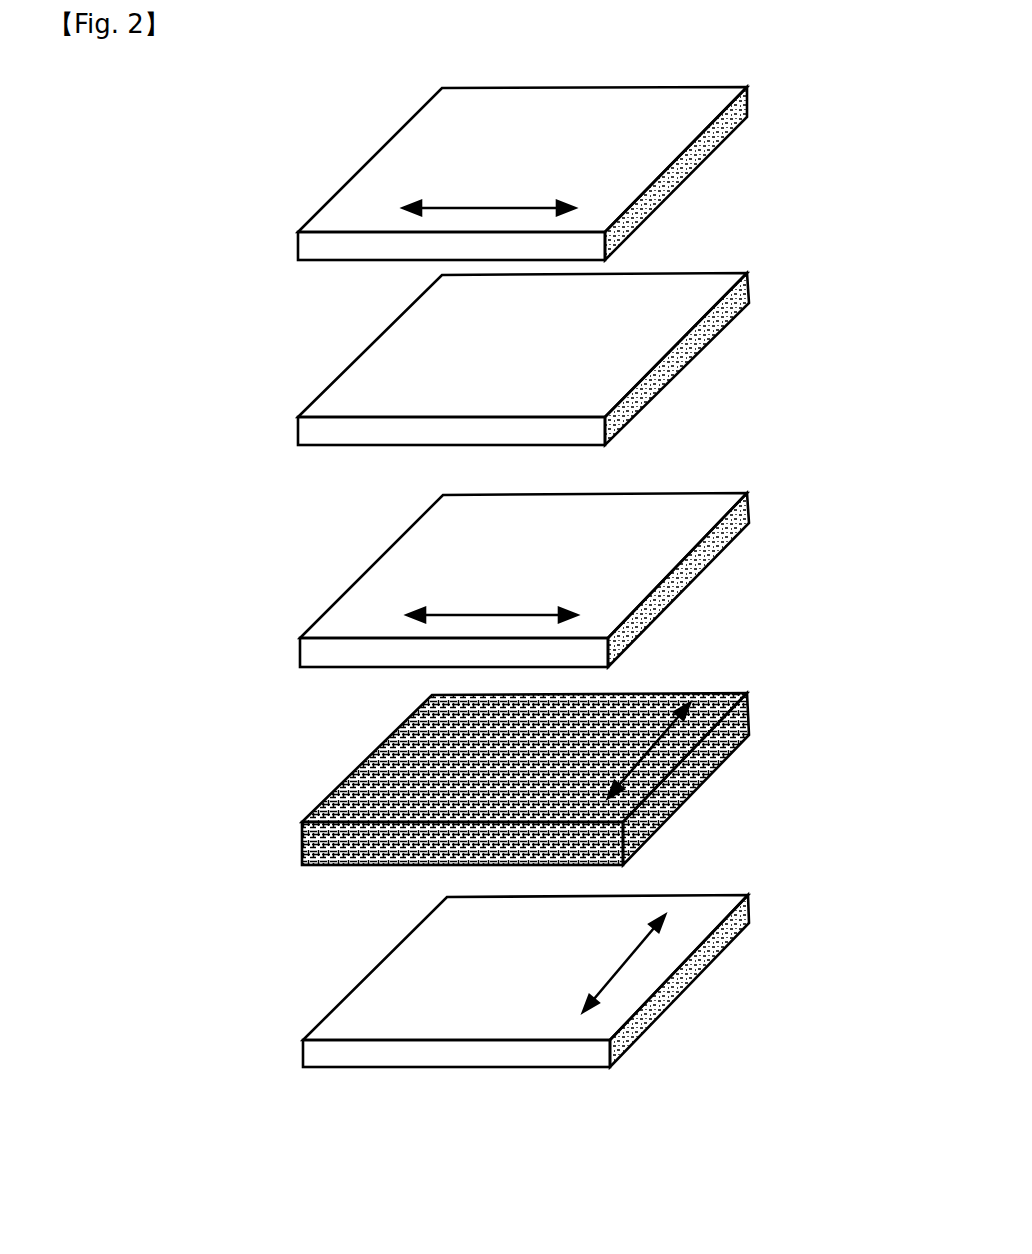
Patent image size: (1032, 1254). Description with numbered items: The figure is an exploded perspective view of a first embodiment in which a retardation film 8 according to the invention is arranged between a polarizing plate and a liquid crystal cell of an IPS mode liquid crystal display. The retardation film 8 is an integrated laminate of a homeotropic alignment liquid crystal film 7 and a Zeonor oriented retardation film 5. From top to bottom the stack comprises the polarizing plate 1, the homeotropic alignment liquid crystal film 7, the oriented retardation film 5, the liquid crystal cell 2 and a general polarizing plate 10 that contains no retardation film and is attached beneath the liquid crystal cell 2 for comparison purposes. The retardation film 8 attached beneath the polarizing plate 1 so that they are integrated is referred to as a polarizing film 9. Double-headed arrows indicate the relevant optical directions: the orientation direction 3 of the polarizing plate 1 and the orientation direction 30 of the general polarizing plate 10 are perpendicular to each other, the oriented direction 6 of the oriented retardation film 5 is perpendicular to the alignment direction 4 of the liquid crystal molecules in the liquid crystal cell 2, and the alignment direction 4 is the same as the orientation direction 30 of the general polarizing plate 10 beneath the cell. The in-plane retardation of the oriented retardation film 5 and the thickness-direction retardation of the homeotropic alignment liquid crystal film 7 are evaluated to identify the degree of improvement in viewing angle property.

The polarizing plate 1 is at (703, 151).
The orientation direction 3 is at (470, 207).
The homeotropic alignment liquid crystal film 7 is at (700, 343).
The oriented retardation film 5 is at (748, 513).
The oriented direction 6 is at (442, 617).
The retardation film 8 is at (225, 307).
The polarizing film 9 is at (162, 148).
The liquid crystal cell 2 is at (748, 718).
The alignment direction 4 is at (705, 770).
The general polarizing plate 10 is at (749, 915).
The orientation direction 30 is at (627, 965).